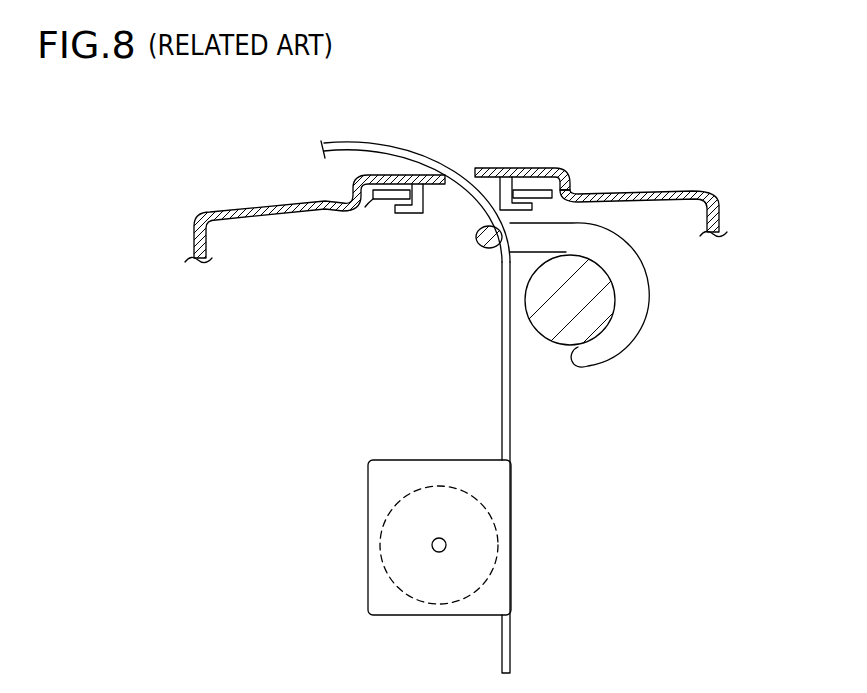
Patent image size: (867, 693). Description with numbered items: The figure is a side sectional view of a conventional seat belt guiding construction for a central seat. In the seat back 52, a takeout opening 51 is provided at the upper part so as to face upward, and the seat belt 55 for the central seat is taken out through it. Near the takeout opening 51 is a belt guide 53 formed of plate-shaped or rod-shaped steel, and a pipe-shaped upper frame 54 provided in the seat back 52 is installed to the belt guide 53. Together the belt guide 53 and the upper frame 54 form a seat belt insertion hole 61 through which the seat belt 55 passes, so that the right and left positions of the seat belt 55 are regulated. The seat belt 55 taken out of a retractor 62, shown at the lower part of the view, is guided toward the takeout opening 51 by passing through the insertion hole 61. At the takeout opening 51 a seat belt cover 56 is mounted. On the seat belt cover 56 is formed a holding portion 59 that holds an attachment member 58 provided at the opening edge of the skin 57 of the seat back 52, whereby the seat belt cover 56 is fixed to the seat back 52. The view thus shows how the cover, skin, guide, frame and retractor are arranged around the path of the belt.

The takeout opening 51 is at (463, 162).
The seat back 52 is at (189, 227).
The belt guide 53 is at (633, 308).
The upper frame 54 is at (558, 331).
The seat belt 55 is at (511, 432).
The seat belt cover 56 is at (525, 167).
The skin 57 is at (416, 196).
The attachment member 58 is at (384, 204).
The holding portion 59 is at (410, 214).
The seat belt insertion hole 61 is at (527, 262).
The retractor 62 is at (393, 612).